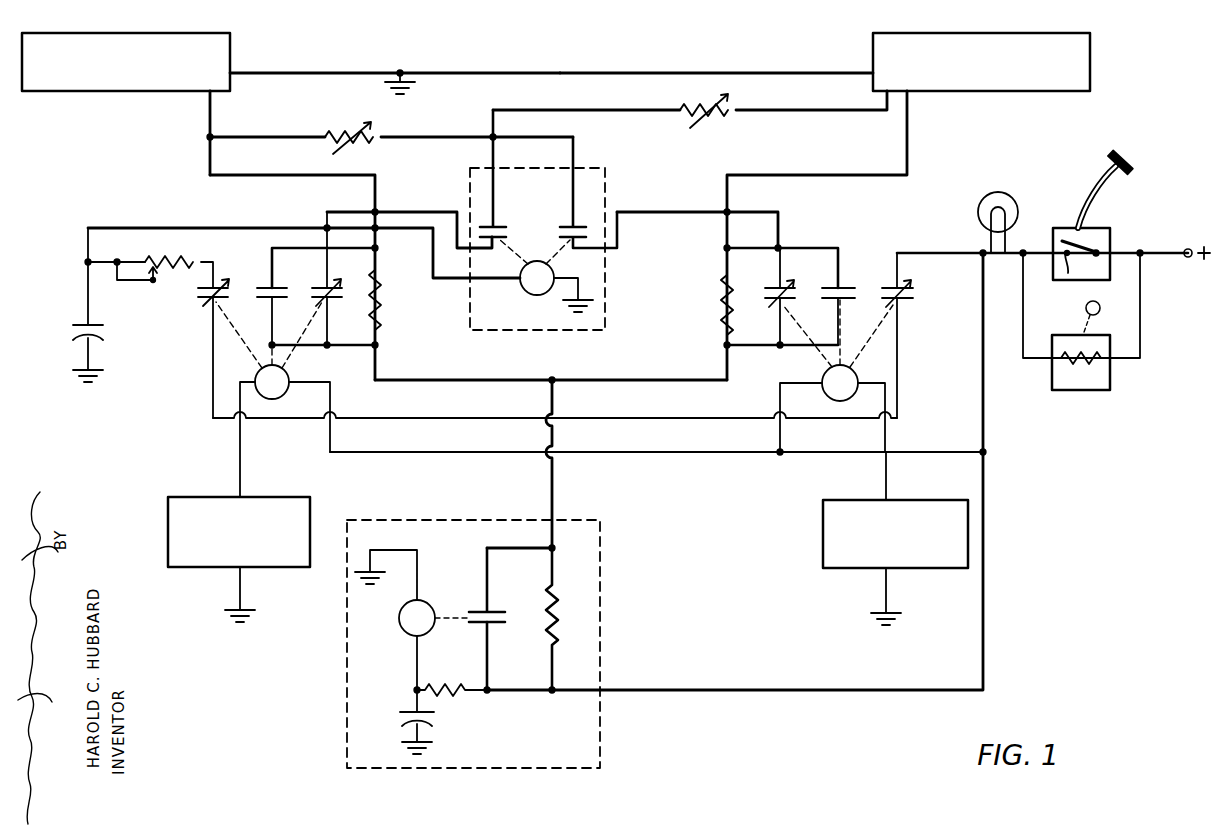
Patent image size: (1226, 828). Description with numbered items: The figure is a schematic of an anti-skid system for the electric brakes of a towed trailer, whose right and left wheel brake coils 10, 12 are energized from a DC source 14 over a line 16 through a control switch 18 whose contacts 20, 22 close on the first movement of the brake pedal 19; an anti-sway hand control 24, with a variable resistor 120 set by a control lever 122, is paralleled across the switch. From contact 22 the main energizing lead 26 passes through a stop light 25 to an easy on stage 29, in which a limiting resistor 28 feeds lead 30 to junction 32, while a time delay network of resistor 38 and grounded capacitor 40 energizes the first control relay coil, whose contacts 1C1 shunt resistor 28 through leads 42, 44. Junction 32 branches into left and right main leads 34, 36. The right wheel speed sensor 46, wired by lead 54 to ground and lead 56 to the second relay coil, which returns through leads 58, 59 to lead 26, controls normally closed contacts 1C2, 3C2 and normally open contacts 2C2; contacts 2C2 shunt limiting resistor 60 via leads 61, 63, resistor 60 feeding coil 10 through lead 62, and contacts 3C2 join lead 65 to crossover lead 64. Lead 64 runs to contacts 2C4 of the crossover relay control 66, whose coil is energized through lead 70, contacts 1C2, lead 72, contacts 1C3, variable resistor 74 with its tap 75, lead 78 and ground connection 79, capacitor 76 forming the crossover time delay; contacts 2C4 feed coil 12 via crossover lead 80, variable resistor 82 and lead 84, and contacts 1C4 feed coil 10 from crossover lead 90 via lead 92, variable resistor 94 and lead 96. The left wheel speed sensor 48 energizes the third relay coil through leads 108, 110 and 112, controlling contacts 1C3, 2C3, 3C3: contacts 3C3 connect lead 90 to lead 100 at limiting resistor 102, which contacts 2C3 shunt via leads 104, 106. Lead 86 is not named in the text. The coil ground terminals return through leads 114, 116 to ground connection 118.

The right wheel brake coil 10 is at (975, 91).
The left wheel brake coil 12 is at (100, 91).
The source of DC current 14 is at (1185, 258).
The line 16 is at (1158, 252).
The control switch 18 is at (1112, 222).
The brake pedal 19 is at (1093, 186).
The contact 20 is at (1110, 232).
The contact 22 is at (1070, 281).
The anti-sway hand control 24 is at (1083, 390).
The stop light 25 is at (995, 192).
The main brake puck energizing lead 26 is at (810, 688).
The limiting resistor 28 is at (572, 612).
The easy on stage 29 is at (512, 776).
The lead 30 is at (552, 490).
The junction 32 is at (552, 380).
The left main lead 34 is at (460, 380).
The right main lead 36 is at (641, 380).
The resistor 38 is at (465, 694).
The grounded capacitor 40 is at (400, 710).
The lead 42 is at (489, 652).
The lead 44 is at (485, 548).
The right wheel speed sensor 46 is at (824, 500).
The left wheel speed sensor 48 is at (175, 497).
The lead 54 is at (886, 592).
The lead 56 is at (885, 475).
The lead 58 is at (780, 402).
The lead 59 is at (814, 452).
The limiting resistor 60 is at (722, 300).
The lead 61 is at (796, 248).
The lead 62 is at (808, 175).
The lead 63 is at (800, 345).
The crossover lead 64 is at (648, 212).
The lead 65 is at (778, 320).
The crossover relay control 66 is at (619, 284).
The lead 70 is at (918, 253).
The lead 72 is at (601, 420).
The variable resistor 74 is at (184, 262).
The tap 75 is at (152, 282).
The capacitor 76 is at (78, 322).
The lead 78 is at (168, 228).
The ground connection 79 is at (564, 301).
The crossover lead 80 is at (420, 137).
The variable resistor 82 is at (344, 136).
The lead 84 is at (255, 137).
The conductor 86 is at (210, 165).
The crossover lead 90 is at (414, 212).
The crossover lead 92 is at (579, 110).
The variable resistor 94 is at (724, 118).
The lead 96 is at (814, 110).
The lead 100 is at (330, 320).
The limiting resistor 102 is at (380, 300).
The lead 104 is at (276, 247).
The lead 106 is at (300, 345).
The lead 108 is at (480, 452).
The lead 110 is at (240, 455).
The lead 112 is at (240, 592).
The lead 114 is at (612, 72).
The lead 116 is at (320, 71).
The ground connection 118 is at (410, 82).
The variable resistor 120 is at (1110, 371).
The control lever 122 is at (1084, 310).
The relay CR1 contacts 1C1 is at (492, 612).
The relay CR2 contacts 1C2 is at (904, 300).
The relay CR2 contacts 2C2 is at (849, 288).
The relay CR2 contacts 3C2 is at (770, 288).
The relay CR3 contacts 1C3 is at (200, 300).
The relay CR3 contacts 2C3 is at (276, 288).
The relay CR3 contacts 3C3 is at (344, 290).
The relay CR4 contacts 1C4 is at (500, 227).
The relay CR4 contacts 2C4 is at (568, 224).